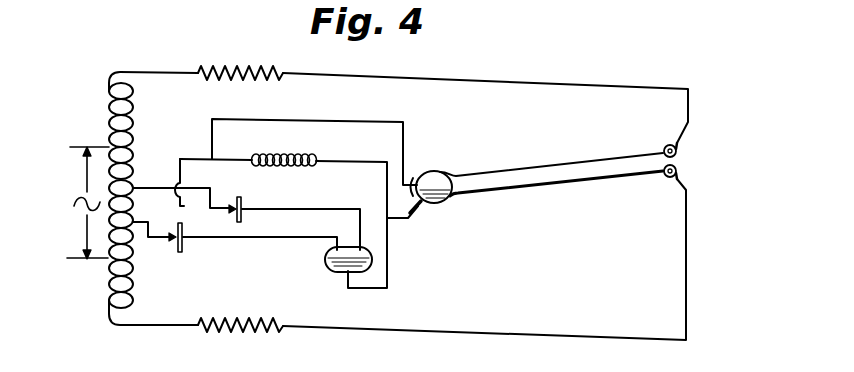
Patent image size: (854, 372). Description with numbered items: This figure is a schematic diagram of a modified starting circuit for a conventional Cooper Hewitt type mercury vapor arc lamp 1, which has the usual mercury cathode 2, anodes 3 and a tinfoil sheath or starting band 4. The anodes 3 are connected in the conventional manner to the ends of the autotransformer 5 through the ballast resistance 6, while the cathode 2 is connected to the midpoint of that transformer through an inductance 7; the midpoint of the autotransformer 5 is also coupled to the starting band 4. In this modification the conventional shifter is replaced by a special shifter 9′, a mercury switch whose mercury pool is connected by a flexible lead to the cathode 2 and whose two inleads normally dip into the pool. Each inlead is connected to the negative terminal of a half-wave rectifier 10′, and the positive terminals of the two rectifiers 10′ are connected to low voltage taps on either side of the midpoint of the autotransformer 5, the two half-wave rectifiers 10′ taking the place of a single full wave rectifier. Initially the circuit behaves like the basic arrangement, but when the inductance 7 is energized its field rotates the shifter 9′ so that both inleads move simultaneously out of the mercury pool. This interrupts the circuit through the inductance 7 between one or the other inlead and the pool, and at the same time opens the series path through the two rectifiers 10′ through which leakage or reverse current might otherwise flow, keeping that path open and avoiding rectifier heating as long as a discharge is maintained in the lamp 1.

The mercury vapor arc lamp 1 is at (577, 173).
The mercury cathode 2 is at (435, 195).
The anodes 3 is at (678, 167).
The starting band 4 is at (437, 203).
The autotransformer 5 is at (134, 123).
The ballast resistance 6 is at (222, 68).
The inductance 7 is at (267, 153).
The shifter 9′ is at (327, 255).
The half-wave rectifiers 10′ is at (233, 219).